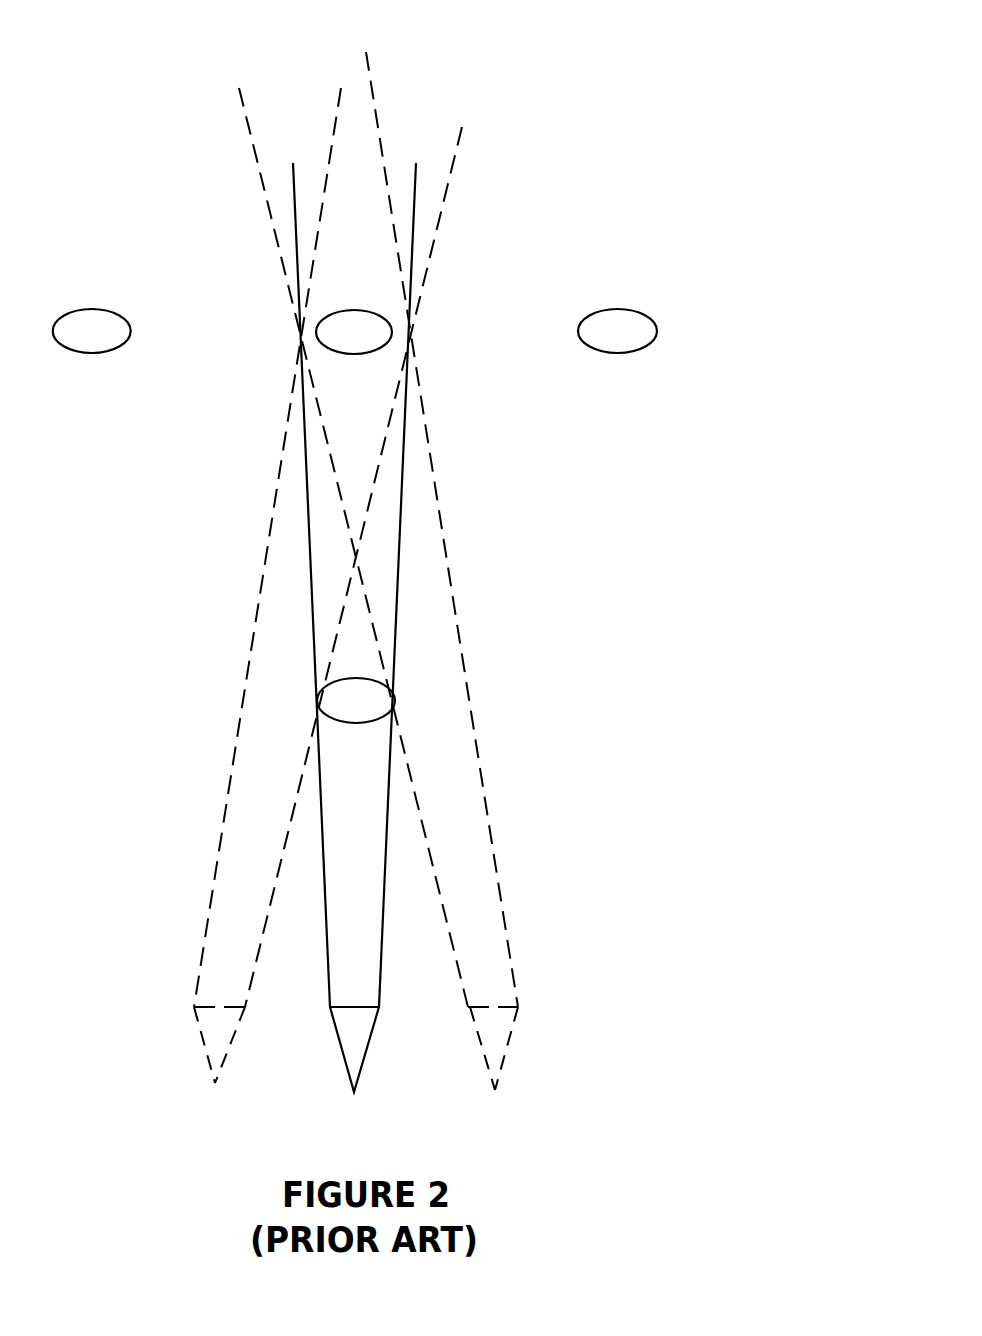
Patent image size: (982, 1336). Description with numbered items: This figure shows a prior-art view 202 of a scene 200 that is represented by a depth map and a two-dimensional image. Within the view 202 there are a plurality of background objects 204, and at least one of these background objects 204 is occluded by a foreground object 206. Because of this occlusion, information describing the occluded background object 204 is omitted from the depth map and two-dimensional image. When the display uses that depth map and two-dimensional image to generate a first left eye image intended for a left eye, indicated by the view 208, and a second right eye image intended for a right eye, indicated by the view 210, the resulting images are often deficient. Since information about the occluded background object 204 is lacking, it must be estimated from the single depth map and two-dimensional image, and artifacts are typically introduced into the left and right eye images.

The scene 200 is at (806, 88).
The view 202 is at (360, 1075).
The background objects 204 is at (352, 313).
The foreground object 206 is at (380, 688).
The view for left eye 208 is at (205, 1073).
The view for right eye 210 is at (512, 1073).